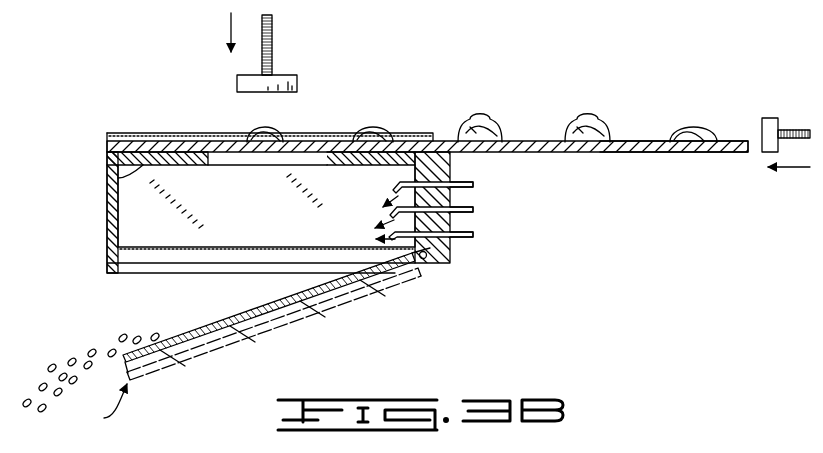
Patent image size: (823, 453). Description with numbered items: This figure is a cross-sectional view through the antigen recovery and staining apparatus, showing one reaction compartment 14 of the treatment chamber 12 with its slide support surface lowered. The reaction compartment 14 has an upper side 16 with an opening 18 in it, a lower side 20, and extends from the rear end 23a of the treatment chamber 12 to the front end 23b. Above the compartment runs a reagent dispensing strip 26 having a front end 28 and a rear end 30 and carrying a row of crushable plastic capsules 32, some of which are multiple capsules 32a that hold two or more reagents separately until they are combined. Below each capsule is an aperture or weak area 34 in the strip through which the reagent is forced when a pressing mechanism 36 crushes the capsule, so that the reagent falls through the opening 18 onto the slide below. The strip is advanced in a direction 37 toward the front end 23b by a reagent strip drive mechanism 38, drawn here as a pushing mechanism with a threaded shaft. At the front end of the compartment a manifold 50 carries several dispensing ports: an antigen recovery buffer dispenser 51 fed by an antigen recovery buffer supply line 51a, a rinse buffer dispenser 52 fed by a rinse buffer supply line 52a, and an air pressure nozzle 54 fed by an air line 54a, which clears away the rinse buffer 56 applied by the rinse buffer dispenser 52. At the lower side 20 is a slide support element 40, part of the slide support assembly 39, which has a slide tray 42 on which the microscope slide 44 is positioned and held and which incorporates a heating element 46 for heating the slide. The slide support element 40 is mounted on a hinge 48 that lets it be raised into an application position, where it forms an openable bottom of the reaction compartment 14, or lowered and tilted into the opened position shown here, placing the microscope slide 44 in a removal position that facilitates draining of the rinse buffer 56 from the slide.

The treatment chamber 12 is at (107, 172).
The reaction compartment 14 is at (140, 213).
The upper side 16 is at (107, 158).
The opening 18 is at (237, 160).
The lower side 20 is at (152, 238).
The rear end 23a is at (104, 191).
The front end 23b is at (457, 168).
The reagent dispensing strip 26 is at (203, 143).
The front end 28 is at (107, 143).
The rear end 30 is at (748, 151).
The capsule 32 is at (280, 128).
The multiple capsule 32a is at (482, 113).
The aperture or weak area 34 is at (265, 145).
The pressing mechanism 36 is at (272, 42).
The direction 37 is at (800, 170).
The reagent strip drive mechanism 38 is at (800, 130).
The slide support assembly 39 is at (102, 408).
The slide support element 40 is at (122, 363).
The slide tray 42 is at (335, 300).
The microscope slide 44 is at (220, 320).
The heating element 46 is at (262, 333).
The hinge 48 is at (437, 267).
The manifold 50 is at (451, 219).
The antigen recovery buffer dispenser 51 is at (391, 211).
The antigen recovery buffer supply line 51a is at (475, 210).
The rinse buffer dispenser 52 is at (394, 186).
The rinse buffer supply line 52a is at (477, 184).
The air pressure nozzle 54 is at (389, 235).
The air line 54a is at (460, 238).
The rinse buffer 56 is at (92, 350).